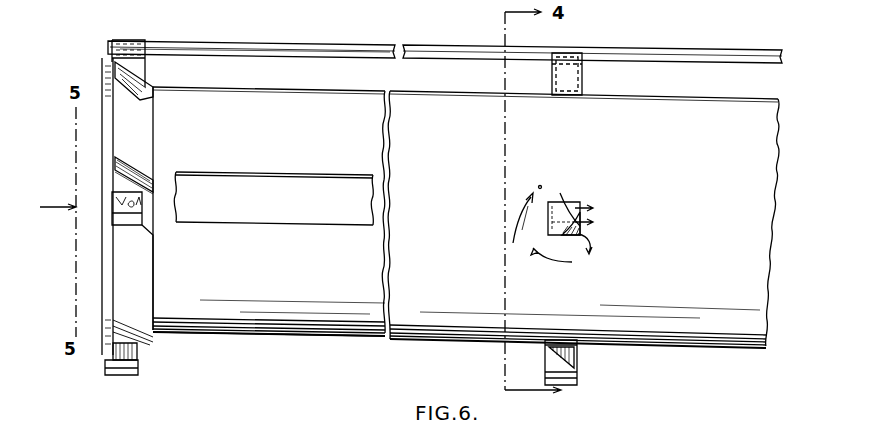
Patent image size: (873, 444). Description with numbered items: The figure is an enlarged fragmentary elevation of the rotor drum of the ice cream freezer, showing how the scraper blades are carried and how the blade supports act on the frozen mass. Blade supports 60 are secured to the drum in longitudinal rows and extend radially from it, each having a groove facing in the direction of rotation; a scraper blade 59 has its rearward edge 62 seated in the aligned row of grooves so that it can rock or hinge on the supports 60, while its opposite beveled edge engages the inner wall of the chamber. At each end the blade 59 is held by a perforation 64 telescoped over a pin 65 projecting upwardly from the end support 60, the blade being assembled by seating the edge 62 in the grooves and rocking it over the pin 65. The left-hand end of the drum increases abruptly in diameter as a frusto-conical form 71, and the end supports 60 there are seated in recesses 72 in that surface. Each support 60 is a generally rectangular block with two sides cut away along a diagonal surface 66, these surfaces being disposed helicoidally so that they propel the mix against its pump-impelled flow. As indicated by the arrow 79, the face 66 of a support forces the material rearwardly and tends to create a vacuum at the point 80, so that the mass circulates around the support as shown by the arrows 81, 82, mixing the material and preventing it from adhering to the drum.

The scraper blade 59 is at (350, 44).
The rearward edge 62 is at (322, 54).
The perforation 64 is at (122, 40).
The frusto-conical form 71 is at (153, 90).
The recess 72 is at (135, 193).
The diagonal surface 66 is at (142, 208).
The pin 65 is at (118, 375).
The blade support 60 is at (577, 362).
The arrow 79 is at (562, 197).
The point 80 is at (541, 185).
The arrow 81 is at (552, 262).
The arrow 82 is at (518, 229).